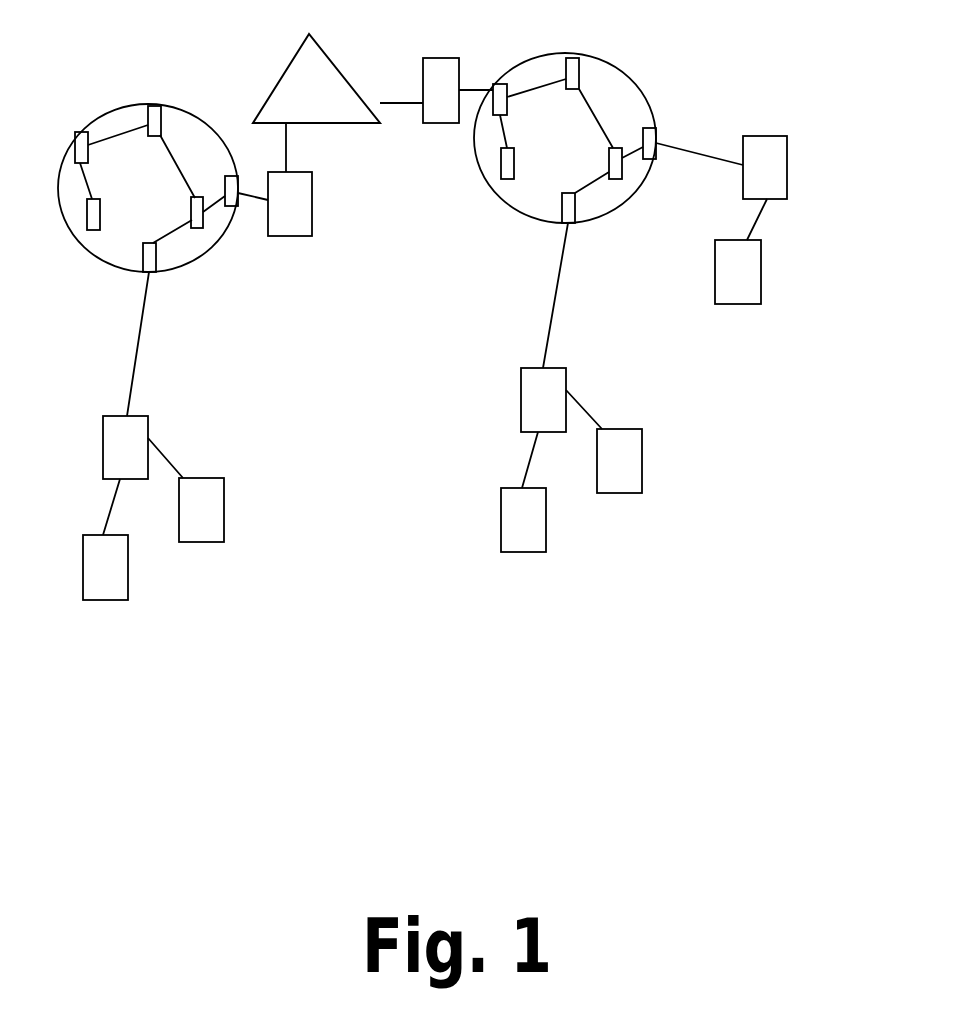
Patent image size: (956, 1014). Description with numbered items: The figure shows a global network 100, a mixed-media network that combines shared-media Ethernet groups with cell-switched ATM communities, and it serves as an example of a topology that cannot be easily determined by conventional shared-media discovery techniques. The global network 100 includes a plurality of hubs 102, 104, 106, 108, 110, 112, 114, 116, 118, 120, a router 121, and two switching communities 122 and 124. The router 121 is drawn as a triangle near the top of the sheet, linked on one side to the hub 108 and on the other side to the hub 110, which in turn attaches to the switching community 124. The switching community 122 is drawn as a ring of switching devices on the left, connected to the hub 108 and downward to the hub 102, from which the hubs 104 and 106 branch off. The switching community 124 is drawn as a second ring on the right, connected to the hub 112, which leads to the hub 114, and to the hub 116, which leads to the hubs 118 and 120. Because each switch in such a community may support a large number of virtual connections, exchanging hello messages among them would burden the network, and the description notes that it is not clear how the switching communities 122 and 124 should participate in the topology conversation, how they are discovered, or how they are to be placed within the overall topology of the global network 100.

The global network 100 is at (307, 697).
The hub 102 is at (148, 423).
The hub 104 is at (224, 505).
The hub 106 is at (83, 555).
The hub 108 is at (312, 213).
The hub 110 is at (460, 75).
The hub 112 is at (787, 160).
The hub 114 is at (761, 272).
The hub 116 is at (566, 380).
The hub 118 is at (642, 457).
The hub 120 is at (546, 530).
The router 121 is at (335, 64).
The switching community 122 is at (132, 104).
The switching community 124 is at (628, 76).